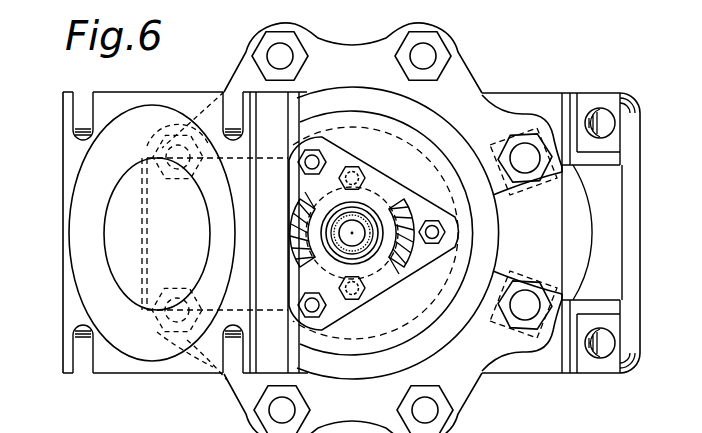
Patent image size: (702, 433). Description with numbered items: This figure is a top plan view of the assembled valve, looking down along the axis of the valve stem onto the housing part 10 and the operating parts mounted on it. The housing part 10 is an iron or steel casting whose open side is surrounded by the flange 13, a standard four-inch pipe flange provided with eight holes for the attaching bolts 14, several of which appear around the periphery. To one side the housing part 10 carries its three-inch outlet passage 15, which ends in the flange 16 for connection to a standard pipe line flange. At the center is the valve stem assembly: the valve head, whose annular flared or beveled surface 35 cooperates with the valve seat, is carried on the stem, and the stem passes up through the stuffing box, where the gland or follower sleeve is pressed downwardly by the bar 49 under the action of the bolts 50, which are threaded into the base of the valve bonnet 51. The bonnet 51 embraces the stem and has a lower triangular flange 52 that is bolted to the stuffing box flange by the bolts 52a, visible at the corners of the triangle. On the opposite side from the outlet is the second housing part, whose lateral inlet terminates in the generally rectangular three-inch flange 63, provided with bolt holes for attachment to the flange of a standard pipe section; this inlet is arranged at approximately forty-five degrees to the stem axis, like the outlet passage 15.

The housing part 10 is at (415, 142).
The flange 13 is at (473, 83).
The attaching bolts 14 is at (283, 52).
The outlet passage 15 is at (112, 215).
The flange 16 is at (66, 287).
The annular flared surface 35 is at (373, 248).
The bar 49 is at (372, 186).
The bolts 50 is at (360, 175).
The valve bonnet 51 is at (413, 262).
The lower triangular flange 52 is at (420, 200).
The bolts 52a is at (314, 158).
The flange 63 is at (640, 190).